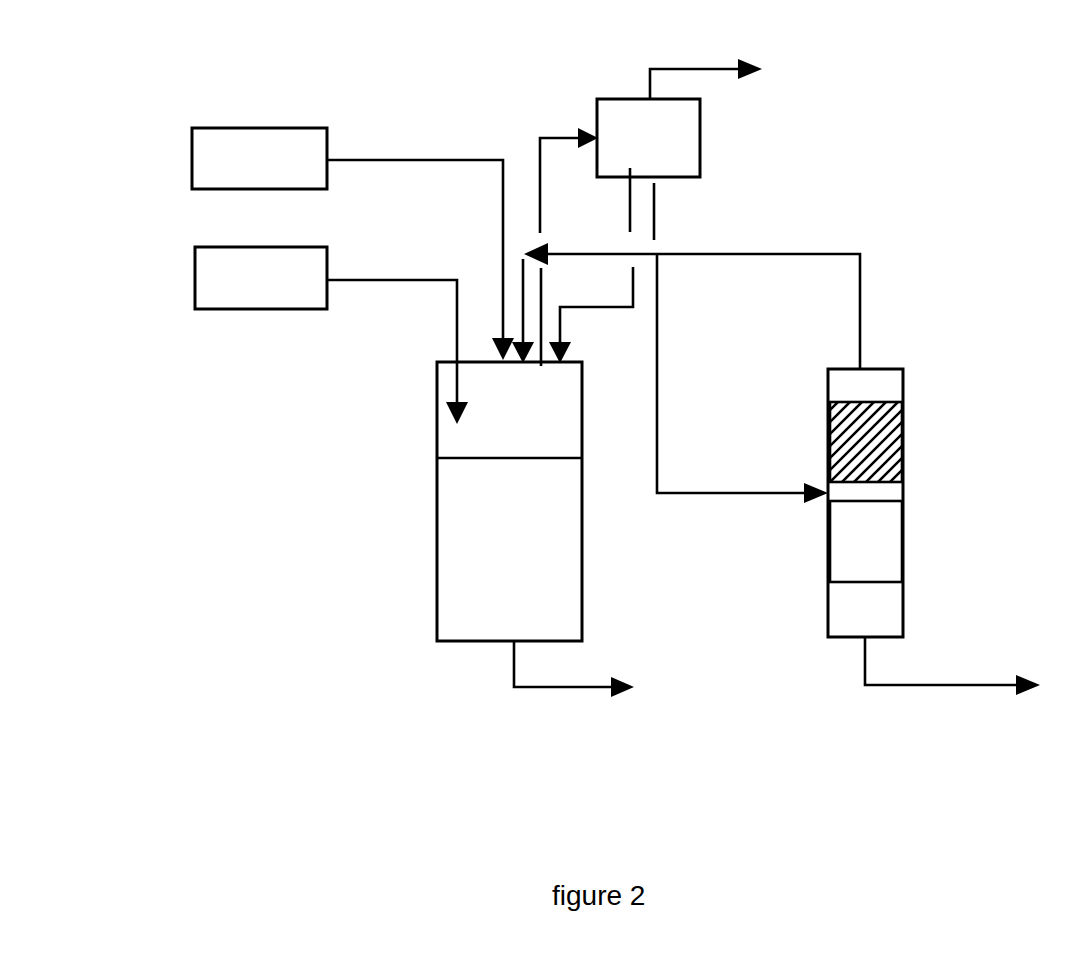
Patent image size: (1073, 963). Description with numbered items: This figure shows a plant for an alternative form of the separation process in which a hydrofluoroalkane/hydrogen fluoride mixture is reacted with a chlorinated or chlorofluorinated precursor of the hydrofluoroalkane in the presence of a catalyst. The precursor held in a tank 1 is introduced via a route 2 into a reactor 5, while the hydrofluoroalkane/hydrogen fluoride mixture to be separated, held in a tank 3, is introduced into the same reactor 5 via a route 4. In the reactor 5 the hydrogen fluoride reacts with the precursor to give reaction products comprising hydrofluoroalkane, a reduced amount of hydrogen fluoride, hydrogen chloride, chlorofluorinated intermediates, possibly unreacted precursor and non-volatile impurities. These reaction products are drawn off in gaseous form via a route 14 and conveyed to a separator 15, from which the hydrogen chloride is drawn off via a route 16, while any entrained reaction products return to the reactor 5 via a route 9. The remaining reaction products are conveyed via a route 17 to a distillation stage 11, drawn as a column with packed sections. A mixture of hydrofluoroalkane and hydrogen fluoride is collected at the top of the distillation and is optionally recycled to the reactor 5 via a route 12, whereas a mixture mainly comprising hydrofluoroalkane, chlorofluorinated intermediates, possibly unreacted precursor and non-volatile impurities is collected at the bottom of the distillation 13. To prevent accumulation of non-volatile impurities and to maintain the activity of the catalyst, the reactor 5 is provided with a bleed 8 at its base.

The tank 1 is at (237, 303).
The route 2 is at (441, 281).
The tank 3 is at (192, 173).
The route 4 is at (447, 161).
The reactor 5 is at (437, 530).
The bleed 8 is at (528, 692).
The route 9 is at (635, 210).
The distillation stage 11 is at (832, 403).
The route 12 is at (863, 275).
The bottom of the distillation 13 is at (940, 688).
The route 14 is at (565, 138).
The separator 15 is at (703, 145).
The route 16 is at (695, 69).
The route 17 is at (700, 495).